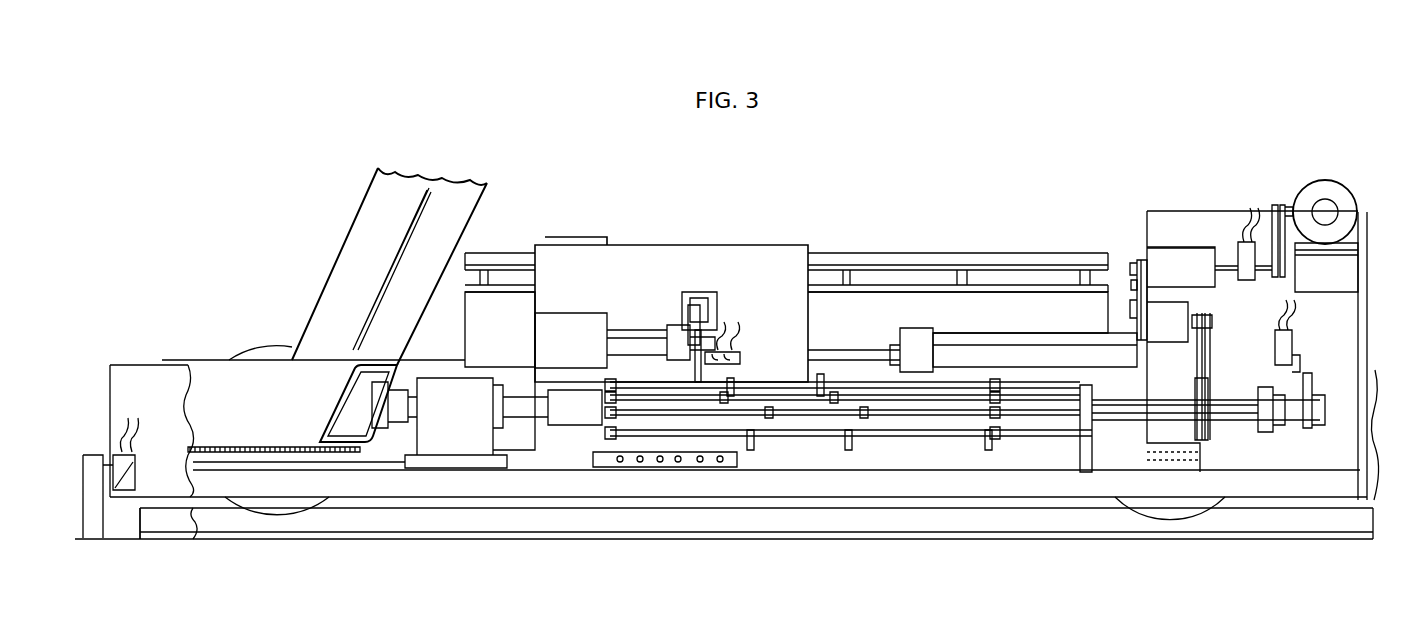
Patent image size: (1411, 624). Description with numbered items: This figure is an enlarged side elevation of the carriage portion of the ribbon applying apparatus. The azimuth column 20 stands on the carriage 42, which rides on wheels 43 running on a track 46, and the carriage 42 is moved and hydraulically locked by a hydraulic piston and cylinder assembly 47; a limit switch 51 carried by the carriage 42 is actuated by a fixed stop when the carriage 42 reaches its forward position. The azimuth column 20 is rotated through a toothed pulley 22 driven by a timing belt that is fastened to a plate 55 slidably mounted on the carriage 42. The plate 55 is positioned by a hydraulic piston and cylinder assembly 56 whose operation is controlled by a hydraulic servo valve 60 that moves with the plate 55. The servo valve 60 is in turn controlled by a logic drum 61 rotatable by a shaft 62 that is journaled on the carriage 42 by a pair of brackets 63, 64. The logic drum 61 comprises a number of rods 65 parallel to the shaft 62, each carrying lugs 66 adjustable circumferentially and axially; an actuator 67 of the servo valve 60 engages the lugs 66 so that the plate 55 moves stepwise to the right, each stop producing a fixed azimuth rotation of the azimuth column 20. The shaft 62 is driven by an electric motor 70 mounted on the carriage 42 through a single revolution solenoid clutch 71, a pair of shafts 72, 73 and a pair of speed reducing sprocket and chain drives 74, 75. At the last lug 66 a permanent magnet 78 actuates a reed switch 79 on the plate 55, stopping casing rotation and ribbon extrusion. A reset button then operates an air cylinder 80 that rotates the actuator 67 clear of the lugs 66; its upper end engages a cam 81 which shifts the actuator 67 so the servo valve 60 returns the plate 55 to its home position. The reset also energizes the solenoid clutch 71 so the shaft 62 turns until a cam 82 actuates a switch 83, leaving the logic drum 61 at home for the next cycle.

The azimuth column 20 is at (358, 238).
The toothed pulley 22 is at (362, 455).
The carriage 42 is at (1300, 485).
The wheels 43 is at (282, 515).
The track 46 is at (175, 537).
The hydraulic piston and cylinder assembly 47 is at (985, 535).
The limit switch 51 is at (136, 478).
The plate 55 is at (782, 252).
The hydraulic piston and cylinder assembly 56 is at (985, 338).
The hydraulic servo valve 60 is at (626, 330).
The logic drum 61 is at (612, 440).
The shaft 62 is at (1150, 412).
The bracket 63 is at (482, 390).
The bracket 64 is at (1093, 432).
The rods 65 is at (606, 432).
The lugs 66 is at (830, 380).
The actuator 67 is at (695, 362).
The electric motor 70 is at (1330, 190).
The single revolution solenoid clutch 71 is at (1240, 244).
The shaft 72 is at (1134, 272).
The shaft 73 is at (1212, 322).
The sprocket and chain drive 74 is at (1137, 300).
The sprocket and chain drive 75 is at (1210, 360).
The permanent magnet 78 is at (920, 372).
The reed switch 79 is at (735, 362).
The air cylinder 80 is at (688, 318).
The cam 81 is at (718, 305).
The cam 82 is at (1312, 382).
The switch 83 is at (1293, 340).